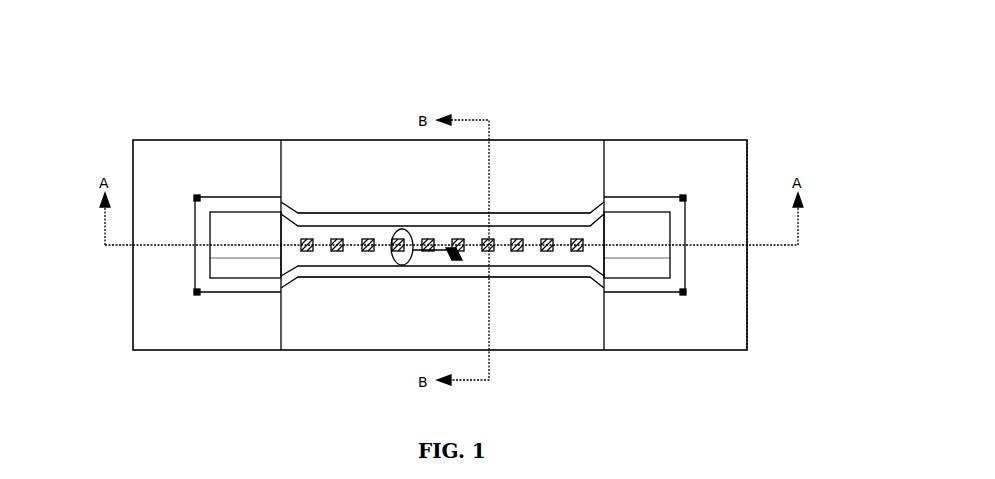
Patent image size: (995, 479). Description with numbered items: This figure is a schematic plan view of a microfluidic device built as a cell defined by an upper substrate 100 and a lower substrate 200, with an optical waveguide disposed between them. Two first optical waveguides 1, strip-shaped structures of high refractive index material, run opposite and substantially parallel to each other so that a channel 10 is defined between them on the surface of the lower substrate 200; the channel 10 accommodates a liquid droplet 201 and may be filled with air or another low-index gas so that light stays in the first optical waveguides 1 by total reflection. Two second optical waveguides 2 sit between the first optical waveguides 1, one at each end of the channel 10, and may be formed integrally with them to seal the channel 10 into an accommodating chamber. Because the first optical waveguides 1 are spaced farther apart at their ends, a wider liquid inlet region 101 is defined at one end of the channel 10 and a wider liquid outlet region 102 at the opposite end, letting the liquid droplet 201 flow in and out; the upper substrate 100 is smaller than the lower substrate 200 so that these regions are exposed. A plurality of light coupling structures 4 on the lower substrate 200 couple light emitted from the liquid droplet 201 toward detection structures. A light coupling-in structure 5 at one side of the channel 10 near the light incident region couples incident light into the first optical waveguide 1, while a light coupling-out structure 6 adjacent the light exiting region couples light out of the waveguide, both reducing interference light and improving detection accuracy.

The first optical waveguide 1 is at (529, 215).
The second optical waveguide 2 is at (203, 258).
The light coupling structure 4 is at (513, 225).
The light coupling-in structure 5 is at (196, 198).
The light coupling-out structure 6 is at (682, 200).
The channel 10 is at (357, 216).
The upper substrate 100 is at (577, 170).
The liquid inlet region 101 is at (241, 237).
The liquid outlet region 102 is at (646, 235).
The lower substrate 200 is at (721, 180).
The liquid droplet 201 is at (396, 230).